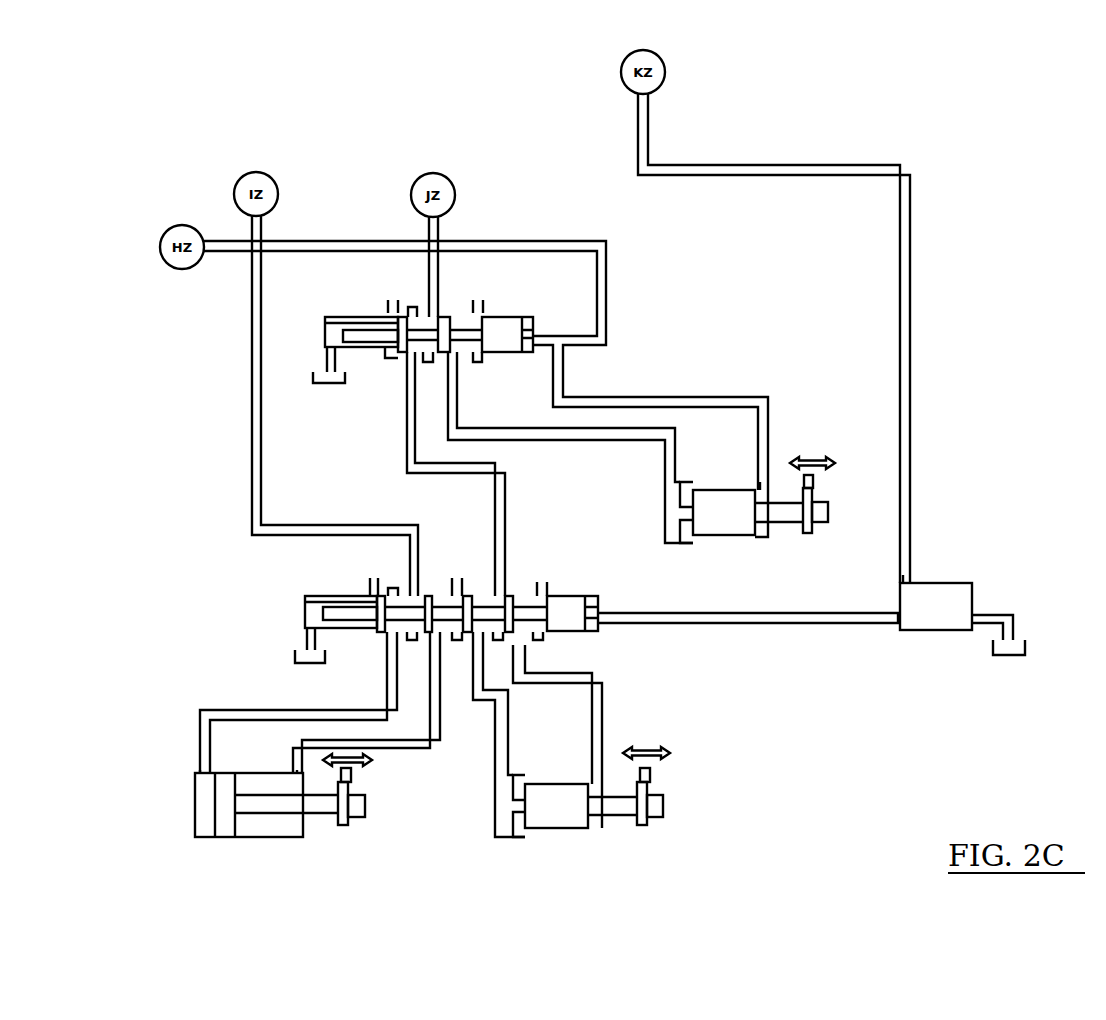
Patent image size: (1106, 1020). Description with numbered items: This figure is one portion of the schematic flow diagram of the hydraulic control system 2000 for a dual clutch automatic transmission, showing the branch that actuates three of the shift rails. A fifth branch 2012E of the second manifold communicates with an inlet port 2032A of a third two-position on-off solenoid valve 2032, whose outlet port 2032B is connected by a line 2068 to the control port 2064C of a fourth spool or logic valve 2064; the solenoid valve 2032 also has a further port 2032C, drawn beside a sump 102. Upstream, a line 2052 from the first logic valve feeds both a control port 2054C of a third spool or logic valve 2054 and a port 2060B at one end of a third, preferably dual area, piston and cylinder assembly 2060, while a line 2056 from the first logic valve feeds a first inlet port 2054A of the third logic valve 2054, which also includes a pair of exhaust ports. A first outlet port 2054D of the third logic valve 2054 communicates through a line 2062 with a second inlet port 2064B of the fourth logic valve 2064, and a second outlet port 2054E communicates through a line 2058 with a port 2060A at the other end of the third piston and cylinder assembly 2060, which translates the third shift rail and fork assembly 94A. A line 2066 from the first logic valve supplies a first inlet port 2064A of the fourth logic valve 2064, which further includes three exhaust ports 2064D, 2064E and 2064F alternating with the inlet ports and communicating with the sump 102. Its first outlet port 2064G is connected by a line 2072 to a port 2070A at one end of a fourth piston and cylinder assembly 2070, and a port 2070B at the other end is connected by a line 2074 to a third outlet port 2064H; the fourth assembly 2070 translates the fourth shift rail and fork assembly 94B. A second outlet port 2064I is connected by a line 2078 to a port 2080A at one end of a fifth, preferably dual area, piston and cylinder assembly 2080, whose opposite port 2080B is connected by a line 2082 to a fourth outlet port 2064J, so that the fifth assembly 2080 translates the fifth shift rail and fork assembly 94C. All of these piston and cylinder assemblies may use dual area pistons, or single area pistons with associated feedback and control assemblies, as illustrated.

The hydraulic control system 2000 is at (1020, 144).
The fifth branch 2012E is at (818, 165).
The third two position solenoid valve 2032 is at (942, 609).
The inlet port 2032A is at (905, 583).
The outlet port 2032B is at (900, 620).
The valve port 2032C is at (970, 628).
The line 2052 is at (607, 292).
The third spool or logic valve 2054 is at (496, 345).
The first inlet port 2054A is at (430, 316).
The control port 2054C is at (535, 336).
The first outlet port 2054D is at (410, 355).
The second outlet port 2054E is at (452, 355).
The line 2056 is at (440, 232).
The line 2058 is at (575, 442).
The third piston and cylinder assembly 2060 is at (722, 490).
The port 2060A is at (672, 485).
The port 2060B is at (762, 485).
The line 2062 is at (410, 473).
The fourth spool or logic valve 2064 is at (448, 626).
The first inlet port 2064A is at (415, 585).
The second inlet port 2064B is at (505, 585).
The control port 2064C is at (600, 615).
The exhaust port 2064D is at (372, 588).
The exhaust port 2064E is at (455, 585).
The exhaust port 2064F is at (545, 585).
The first outlet port 2064G is at (390, 640).
The third outlet port 2064H is at (480, 700).
The second outlet port 2064I is at (398, 706).
The fourth outlet port 2064J is at (525, 637).
The line 2066 is at (254, 425).
The line 2068 is at (770, 625).
The fourth piston and cylinder assembly 2070 is at (252, 790).
The port 2070A is at (197, 774).
The port 2070B is at (300, 775).
The line 2072 is at (200, 716).
The line 2074 is at (410, 752).
The line 2078 is at (490, 758).
The fifth piston and cylinder assembly 2080 is at (643, 792).
The port 2080A is at (500, 778).
The port 2080B is at (598, 772).
The line 2082 is at (603, 735).
The third shift rail and fork assembly 94A is at (825, 512).
The fourth shift rail and fork assembly 94B is at (362, 808).
The fifth shift rail and fork assembly 94C is at (660, 808).
The sump 102 is at (313, 378).